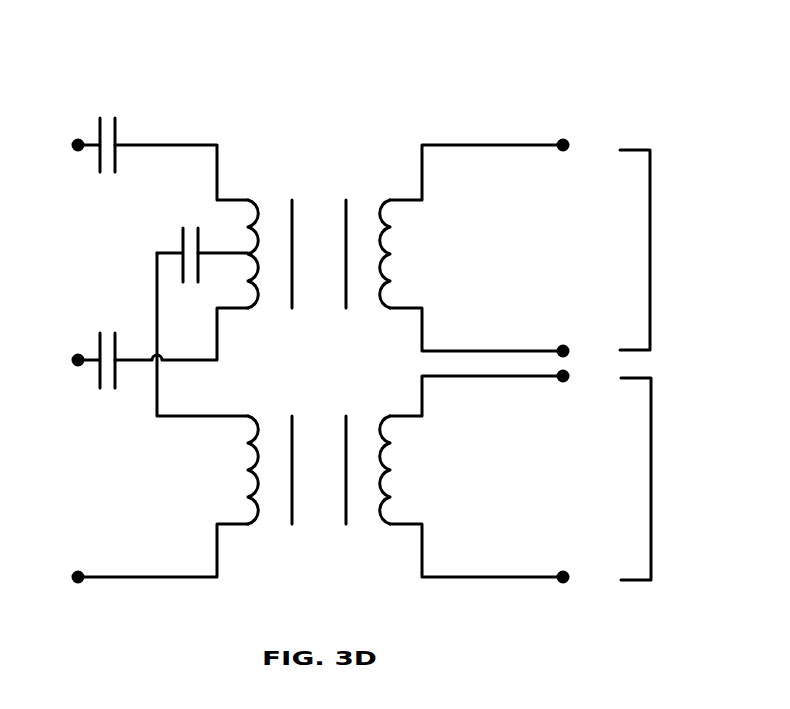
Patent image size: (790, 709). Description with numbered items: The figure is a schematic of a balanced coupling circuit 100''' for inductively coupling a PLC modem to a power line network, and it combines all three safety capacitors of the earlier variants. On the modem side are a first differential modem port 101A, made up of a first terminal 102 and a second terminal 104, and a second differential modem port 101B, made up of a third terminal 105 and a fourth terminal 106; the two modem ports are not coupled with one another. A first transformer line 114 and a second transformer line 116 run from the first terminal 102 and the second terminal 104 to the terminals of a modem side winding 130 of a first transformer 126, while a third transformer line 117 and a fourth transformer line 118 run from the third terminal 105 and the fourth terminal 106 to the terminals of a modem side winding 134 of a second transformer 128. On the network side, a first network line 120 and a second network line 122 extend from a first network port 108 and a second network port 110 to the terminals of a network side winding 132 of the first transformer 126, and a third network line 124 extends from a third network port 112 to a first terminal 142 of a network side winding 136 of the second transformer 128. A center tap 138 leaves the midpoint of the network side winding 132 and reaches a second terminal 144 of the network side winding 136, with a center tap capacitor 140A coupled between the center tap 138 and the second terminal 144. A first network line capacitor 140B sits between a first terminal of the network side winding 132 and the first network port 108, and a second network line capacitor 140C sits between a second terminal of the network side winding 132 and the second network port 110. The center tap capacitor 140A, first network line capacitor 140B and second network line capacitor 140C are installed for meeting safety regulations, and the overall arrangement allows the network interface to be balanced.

The balanced coupling circuit 100''' is at (520, 59).
The first differential modem port 101A is at (650, 237).
The second differential modem port 101B is at (651, 465).
The first terminal 102 is at (568, 147).
The second terminal 104 is at (573, 350).
The third terminal 105 is at (568, 378).
The fourth terminal 106 is at (573, 576).
The first network port 108 is at (74, 147).
The second network port 110 is at (74, 362).
The third network port 112 is at (74, 577).
The first transformer line 114 is at (453, 145).
The second transformer line 116 is at (462, 350).
The third transformer line 117 is at (463, 378).
The fourth transformer line 118 is at (455, 578).
The first network line 120 is at (130, 143).
The second network line 122 is at (143, 360).
The third network line 124 is at (128, 578).
The first transformer 126 is at (318, 172).
The second transformer 128 is at (318, 535).
The modem side winding 130 is at (388, 239).
The network side winding 132 is at (263, 305).
The modem side winding 134 is at (388, 454).
The network side winding 136 is at (267, 418).
The center tap 138 is at (230, 257).
The center tap capacitor 140A is at (181, 243).
The first network line capacitor 140B is at (98, 128).
The second network line capacitor 140C is at (113, 377).
The first terminal 142 is at (227, 522).
The second terminal 144 is at (227, 418).